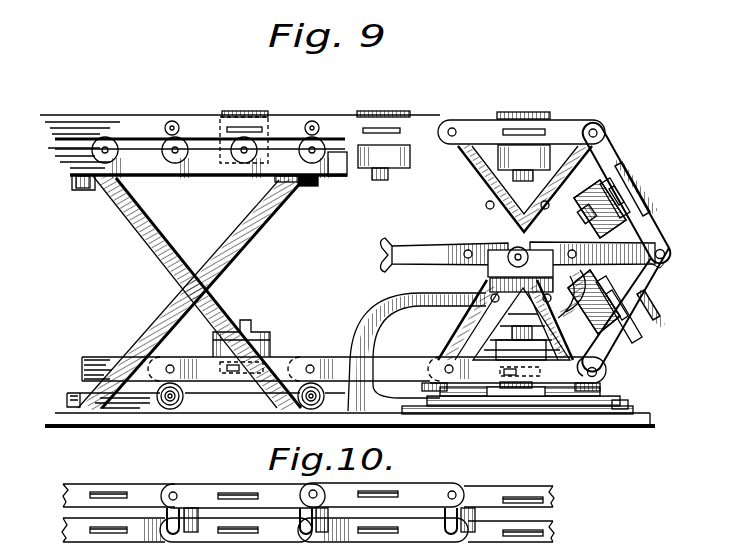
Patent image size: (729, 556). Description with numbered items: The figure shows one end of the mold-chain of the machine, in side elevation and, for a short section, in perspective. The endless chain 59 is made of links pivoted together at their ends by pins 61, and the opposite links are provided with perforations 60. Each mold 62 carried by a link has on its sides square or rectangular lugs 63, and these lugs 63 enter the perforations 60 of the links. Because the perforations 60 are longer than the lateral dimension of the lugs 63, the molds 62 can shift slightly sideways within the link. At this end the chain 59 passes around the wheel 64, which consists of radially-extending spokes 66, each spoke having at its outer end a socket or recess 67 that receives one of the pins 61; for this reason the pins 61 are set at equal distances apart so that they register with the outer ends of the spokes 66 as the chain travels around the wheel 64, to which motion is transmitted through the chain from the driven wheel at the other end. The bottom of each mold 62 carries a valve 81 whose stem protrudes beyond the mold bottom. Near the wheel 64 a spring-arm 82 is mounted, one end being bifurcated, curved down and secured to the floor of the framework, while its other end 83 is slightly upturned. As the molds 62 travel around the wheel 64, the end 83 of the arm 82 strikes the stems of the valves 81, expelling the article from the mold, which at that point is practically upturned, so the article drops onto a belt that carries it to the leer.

In FIG. 9, the endless chain 59 is at (610, 158).
In FIG. 10, the perforations 60 is at (395, 484).
In FIG. 10, the pins 61 is at (178, 508).
In FIG. 9, the mold 62 is at (655, 310).
In FIG. 9, the lugs 63 is at (640, 334).
In FIG. 9, the wheel 64 is at (470, 203).
In FIG. 9, the spokes 66 is at (458, 243).
In FIG. 9, the socket or recess 67 is at (380, 262).
In FIG. 9, the valve 81 is at (250, 324).
In FIG. 9, the spring-arm 82 is at (405, 298).
In FIG. 9, the upturned end 83 is at (592, 243).